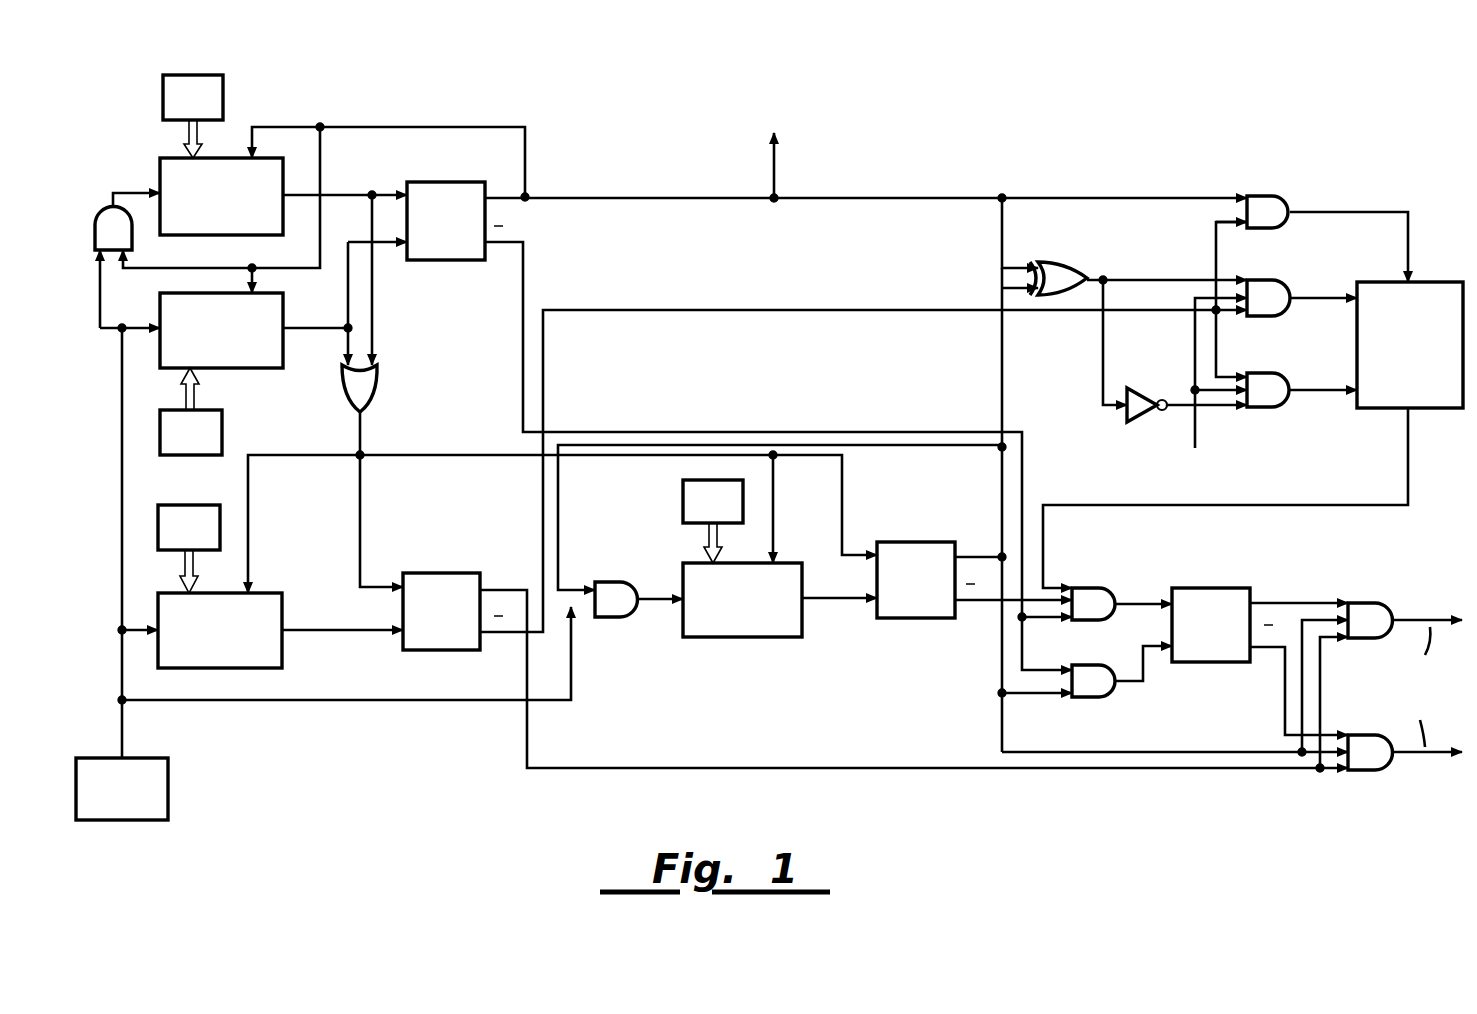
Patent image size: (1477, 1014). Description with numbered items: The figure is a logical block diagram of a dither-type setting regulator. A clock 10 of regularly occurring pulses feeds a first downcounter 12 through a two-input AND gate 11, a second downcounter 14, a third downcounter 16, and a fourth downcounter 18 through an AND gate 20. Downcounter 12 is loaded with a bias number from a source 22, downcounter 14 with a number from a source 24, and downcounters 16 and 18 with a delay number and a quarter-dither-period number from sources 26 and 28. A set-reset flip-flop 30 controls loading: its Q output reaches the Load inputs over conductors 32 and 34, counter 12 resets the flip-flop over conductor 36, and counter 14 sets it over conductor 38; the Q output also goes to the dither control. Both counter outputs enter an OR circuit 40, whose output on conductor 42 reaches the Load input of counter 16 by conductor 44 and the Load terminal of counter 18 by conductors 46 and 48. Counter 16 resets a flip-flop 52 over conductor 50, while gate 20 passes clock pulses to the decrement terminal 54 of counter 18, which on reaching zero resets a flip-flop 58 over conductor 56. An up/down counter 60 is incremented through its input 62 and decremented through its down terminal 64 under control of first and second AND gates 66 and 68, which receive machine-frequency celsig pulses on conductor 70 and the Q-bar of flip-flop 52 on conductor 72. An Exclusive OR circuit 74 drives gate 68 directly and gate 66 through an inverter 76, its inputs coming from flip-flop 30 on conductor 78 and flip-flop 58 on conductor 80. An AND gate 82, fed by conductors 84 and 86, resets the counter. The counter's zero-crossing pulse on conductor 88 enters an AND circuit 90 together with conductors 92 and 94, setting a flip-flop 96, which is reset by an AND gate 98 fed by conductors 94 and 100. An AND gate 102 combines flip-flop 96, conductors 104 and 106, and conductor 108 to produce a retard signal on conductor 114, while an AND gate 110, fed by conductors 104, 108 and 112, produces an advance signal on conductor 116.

The clock source 10 is at (168, 790).
The AND gate 11 is at (103, 210).
The first downcounter 12 is at (160, 160).
The second downcounter 14 is at (160, 297).
The third downcounter 16 is at (232, 668).
The fourth downcounter 18 is at (730, 637).
The AND gate 20 is at (605, 582).
The source 22 is at (223, 85).
The source 24 is at (222, 420).
The source of binary numbers 26 is at (190, 505).
The source of binary numbers 28 is at (683, 498).
The flip-flop 30 is at (445, 182).
The conductor 32 is at (412, 127).
The conductor 34 is at (322, 152).
The conductor 36 is at (330, 195).
The conductor 38 is at (346, 306).
The OR circuit 40 is at (377, 395).
The conductor 42 is at (363, 433).
The conductor 44 is at (250, 512).
The conductor 46 is at (448, 455).
The conductor 48 is at (776, 500).
The conductor 50 is at (320, 632).
The flip-flop 52 is at (433, 573).
The decrement terminal 54 is at (650, 597).
The conductor 56 is at (822, 600).
The flip-flop 58 is at (910, 542).
The up/down counter 60 is at (1440, 282).
The input 62 is at (1323, 393).
The down terminal 64 is at (1325, 301).
The first AND gate 66 is at (1258, 373).
The second AND gate 68 is at (1258, 280).
The conductor 70 is at (1198, 435).
The conductor 72 is at (795, 310).
The Exclusive OR circuit 74 is at (1060, 262).
The inverter 76 is at (1140, 388).
The conductor 78 is at (1000, 245).
The conductor 80 is at (1000, 370).
The AND gate 82 is at (1268, 196).
The conductor 84 is at (1214, 233).
The conductor 86 is at (905, 198).
The conductor 88 is at (1410, 463).
The AND circuit 90 is at (1090, 588).
The conductor 92 is at (976, 604).
The conductor 94 is at (526, 270).
The flip-flop 96 is at (1205, 588).
The AND gate 98 is at (1090, 665).
The conductor 100 is at (1000, 657).
The AND gate 102 is at (1370, 603).
The conductor 104 is at (1100, 752).
The conductor 106 is at (1300, 720).
The conductor 108 is at (820, 768).
The AND gate 110 is at (1365, 770).
The conductor 112 is at (1283, 693).
The conductor 114 is at (1455, 612).
The conductor 116 is at (1455, 758).